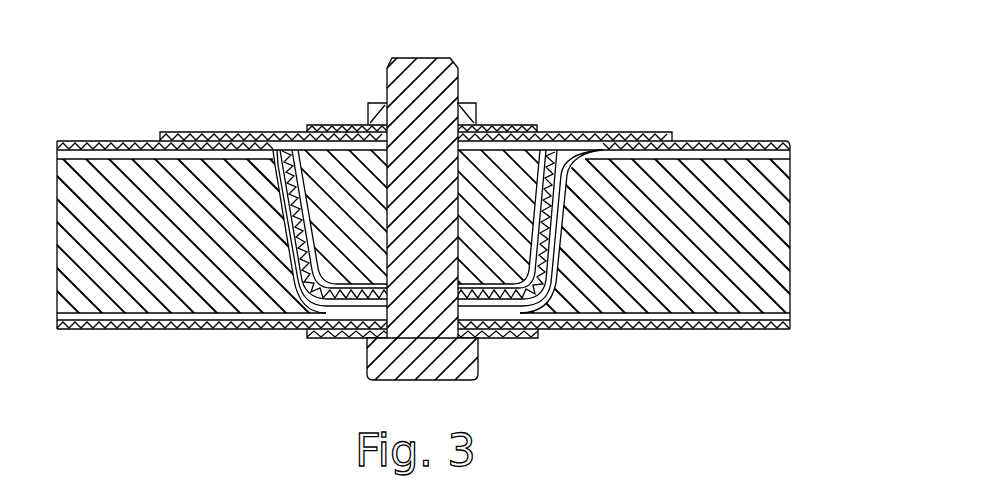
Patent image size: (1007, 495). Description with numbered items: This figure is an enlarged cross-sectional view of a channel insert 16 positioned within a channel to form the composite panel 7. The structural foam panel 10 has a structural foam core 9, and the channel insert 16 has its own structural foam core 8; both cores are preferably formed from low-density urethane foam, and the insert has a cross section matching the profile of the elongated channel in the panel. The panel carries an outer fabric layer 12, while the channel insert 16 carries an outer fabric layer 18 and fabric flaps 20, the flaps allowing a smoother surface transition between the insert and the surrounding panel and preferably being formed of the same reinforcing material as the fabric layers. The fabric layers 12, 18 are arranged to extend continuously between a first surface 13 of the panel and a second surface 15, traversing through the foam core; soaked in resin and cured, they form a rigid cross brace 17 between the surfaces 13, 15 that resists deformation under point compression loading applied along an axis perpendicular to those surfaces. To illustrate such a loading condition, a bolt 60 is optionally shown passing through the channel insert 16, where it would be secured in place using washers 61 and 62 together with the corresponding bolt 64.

The composite panel 7 is at (679, 80).
The structural foam core 8 is at (352, 220).
The structural foam core 9 is at (706, 246).
The structural foam panel 10 is at (183, 287).
The outer fabric layer 12 is at (89, 142).
The first surface 13 is at (756, 145).
The second surface 15 is at (748, 332).
The channel insert 16 is at (526, 140).
The cross brace 17 is at (583, 232).
The outer fabric layer 18 is at (514, 150).
The fabric flaps 20 is at (218, 132).
The bolt 60 is at (403, 58).
The washer 61 is at (540, 334).
The washer 62 is at (316, 125).
The bolt 64 is at (468, 103).